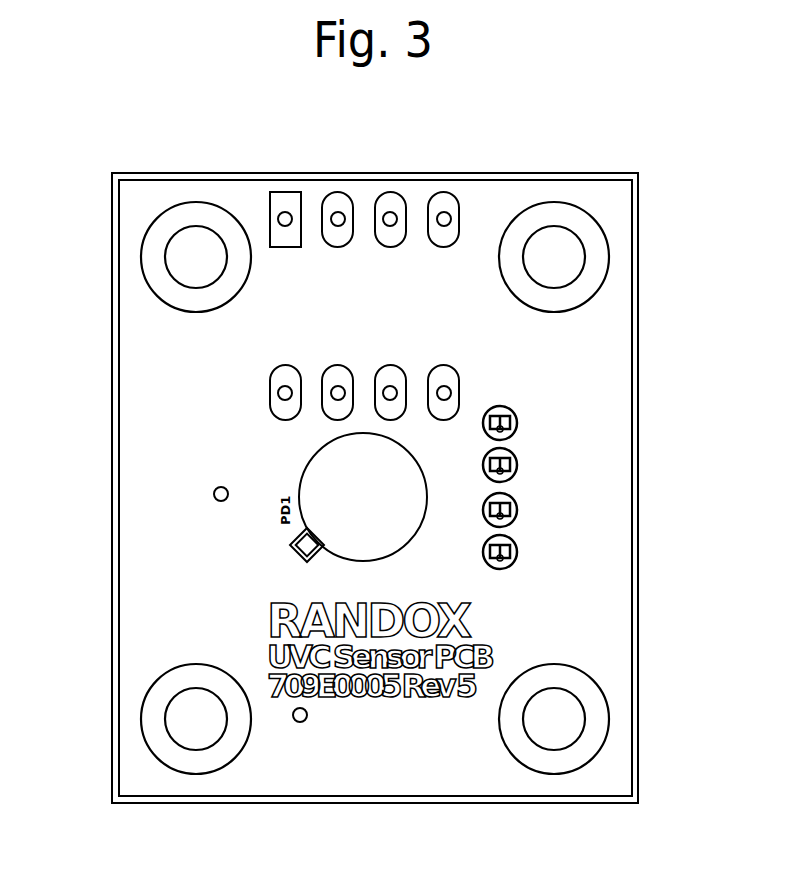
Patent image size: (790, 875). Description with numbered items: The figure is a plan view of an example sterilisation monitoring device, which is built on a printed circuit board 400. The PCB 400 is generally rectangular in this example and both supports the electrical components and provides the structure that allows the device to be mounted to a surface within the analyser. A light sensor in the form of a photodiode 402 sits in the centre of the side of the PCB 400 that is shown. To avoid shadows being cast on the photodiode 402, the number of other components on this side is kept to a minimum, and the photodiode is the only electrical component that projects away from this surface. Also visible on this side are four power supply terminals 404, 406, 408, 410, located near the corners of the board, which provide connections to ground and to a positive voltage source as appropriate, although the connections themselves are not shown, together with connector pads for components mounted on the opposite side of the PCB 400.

The printed circuit board 400 is at (522, 188).
The photodiode 402 is at (329, 473).
The power supply terminal 404 is at (156, 251).
The power supply terminal 406 is at (593, 246).
The power supply terminal 408 is at (598, 717).
The power supply terminal 410 is at (156, 721).